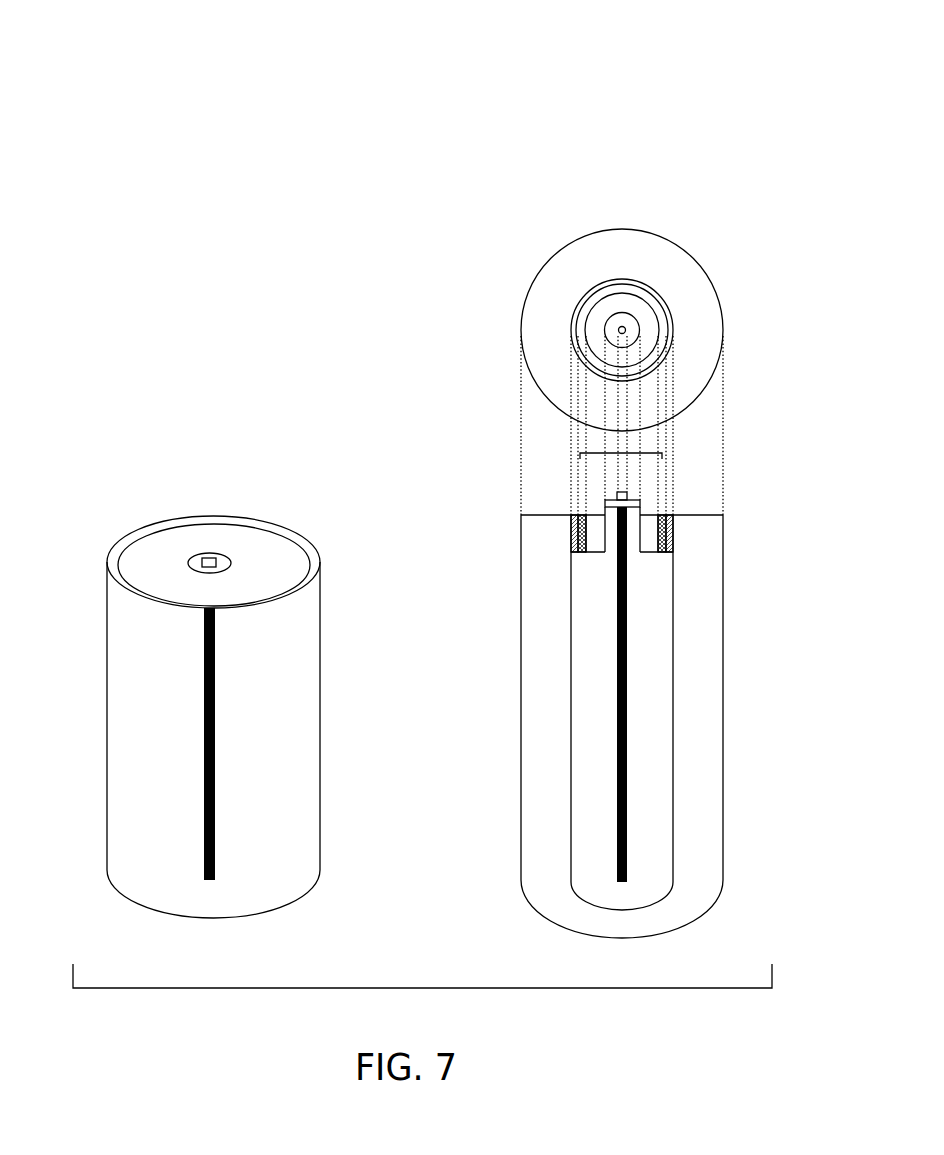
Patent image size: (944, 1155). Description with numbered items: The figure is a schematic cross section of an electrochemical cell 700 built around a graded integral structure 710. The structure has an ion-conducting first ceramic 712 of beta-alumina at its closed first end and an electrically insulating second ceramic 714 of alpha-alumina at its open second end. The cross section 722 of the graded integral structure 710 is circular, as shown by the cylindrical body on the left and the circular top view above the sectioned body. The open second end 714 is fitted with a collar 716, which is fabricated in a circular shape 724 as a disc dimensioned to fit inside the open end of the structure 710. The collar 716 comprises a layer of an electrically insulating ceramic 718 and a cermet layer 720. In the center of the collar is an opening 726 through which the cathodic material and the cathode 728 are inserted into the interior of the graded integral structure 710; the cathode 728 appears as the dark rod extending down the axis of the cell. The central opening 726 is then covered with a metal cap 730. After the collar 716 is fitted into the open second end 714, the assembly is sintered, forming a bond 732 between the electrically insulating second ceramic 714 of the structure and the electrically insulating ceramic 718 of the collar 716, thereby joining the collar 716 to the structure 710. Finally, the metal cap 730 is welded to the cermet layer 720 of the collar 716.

The electrochemical cell 700 is at (700, 58).
The graded integral structure 710 is at (709, 648).
The ion-conducting first ceramic 712 is at (708, 808).
The electrically insulating second ceramic at the open second end 714 is at (673, 538).
The collar 716 is at (580, 453).
The electrically insulating ceramic layer 718 is at (668, 514).
The cermet layer 720 is at (651, 540).
The cross section 722 is at (104, 489).
The circular shape 724 is at (673, 291).
The opening 726 is at (620, 328).
The cathode 728 is at (627, 764).
The metal cap 730 is at (578, 512).
The bond 732 is at (578, 552).